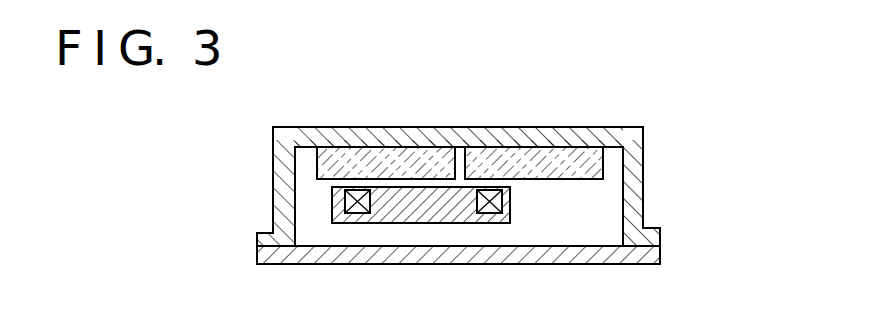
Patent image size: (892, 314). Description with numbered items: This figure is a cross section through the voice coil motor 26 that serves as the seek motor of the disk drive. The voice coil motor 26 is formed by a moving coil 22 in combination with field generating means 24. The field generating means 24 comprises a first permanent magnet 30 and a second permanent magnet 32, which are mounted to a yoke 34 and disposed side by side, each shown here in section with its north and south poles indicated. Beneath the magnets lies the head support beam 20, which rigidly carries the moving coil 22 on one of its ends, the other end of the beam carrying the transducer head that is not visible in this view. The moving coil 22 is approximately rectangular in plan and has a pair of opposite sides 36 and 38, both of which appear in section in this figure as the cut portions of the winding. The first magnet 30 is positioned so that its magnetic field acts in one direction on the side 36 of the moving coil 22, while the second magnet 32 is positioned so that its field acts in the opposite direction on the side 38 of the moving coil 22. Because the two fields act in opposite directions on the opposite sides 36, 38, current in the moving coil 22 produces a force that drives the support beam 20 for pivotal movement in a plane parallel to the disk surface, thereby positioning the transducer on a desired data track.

The head support beam 20 is at (452, 225).
The moving coil 22 is at (357, 214).
The field generating means 24 is at (337, 125).
The voice coil motor 26 is at (673, 130).
The first permanent magnet 30 is at (373, 133).
The second permanent magnet 32 is at (497, 150).
The yoke 34 is at (612, 130).
The side of the moving coil 36 is at (337, 225).
The side of the moving coil 38 is at (510, 206).